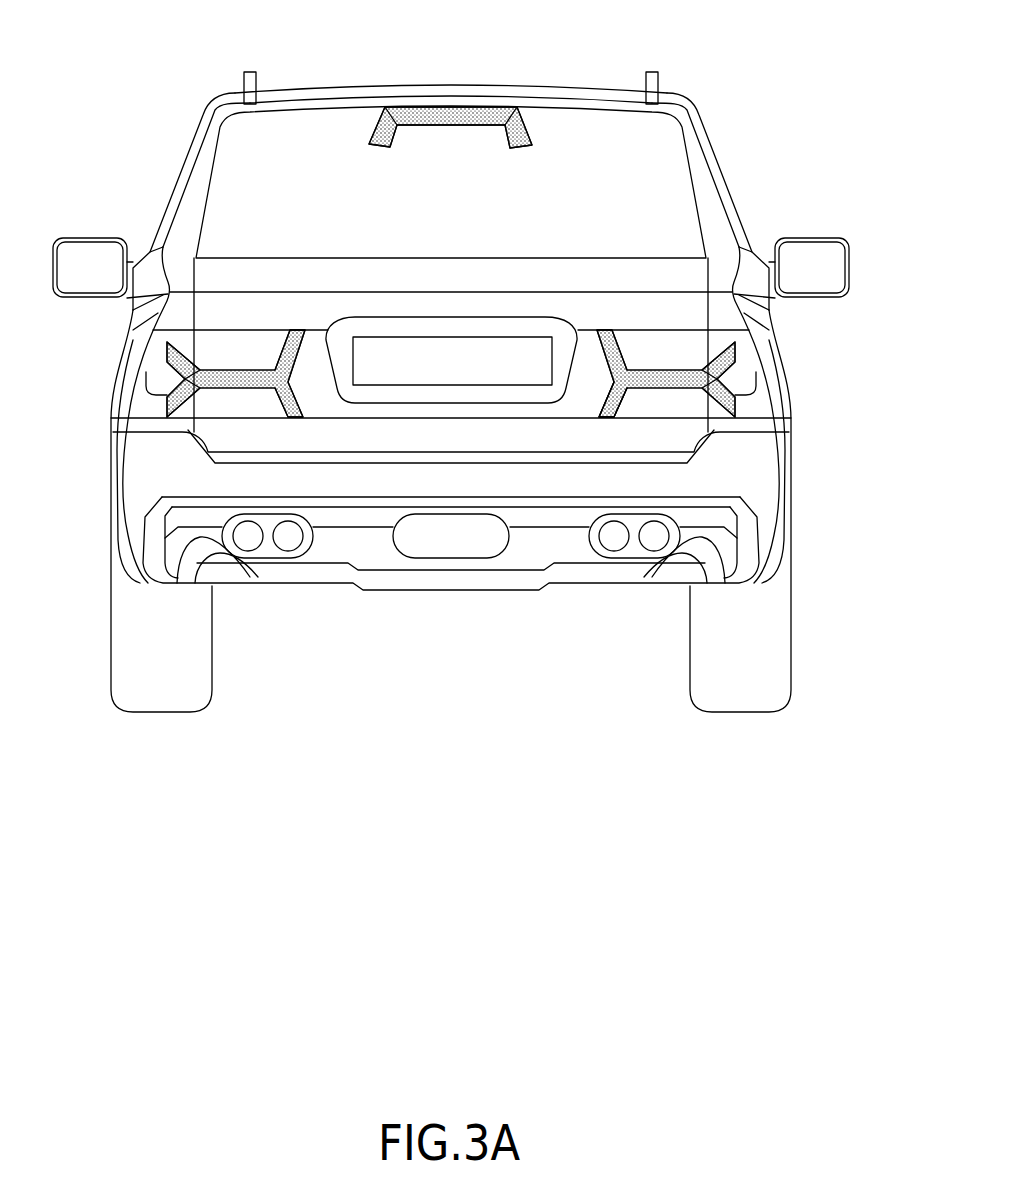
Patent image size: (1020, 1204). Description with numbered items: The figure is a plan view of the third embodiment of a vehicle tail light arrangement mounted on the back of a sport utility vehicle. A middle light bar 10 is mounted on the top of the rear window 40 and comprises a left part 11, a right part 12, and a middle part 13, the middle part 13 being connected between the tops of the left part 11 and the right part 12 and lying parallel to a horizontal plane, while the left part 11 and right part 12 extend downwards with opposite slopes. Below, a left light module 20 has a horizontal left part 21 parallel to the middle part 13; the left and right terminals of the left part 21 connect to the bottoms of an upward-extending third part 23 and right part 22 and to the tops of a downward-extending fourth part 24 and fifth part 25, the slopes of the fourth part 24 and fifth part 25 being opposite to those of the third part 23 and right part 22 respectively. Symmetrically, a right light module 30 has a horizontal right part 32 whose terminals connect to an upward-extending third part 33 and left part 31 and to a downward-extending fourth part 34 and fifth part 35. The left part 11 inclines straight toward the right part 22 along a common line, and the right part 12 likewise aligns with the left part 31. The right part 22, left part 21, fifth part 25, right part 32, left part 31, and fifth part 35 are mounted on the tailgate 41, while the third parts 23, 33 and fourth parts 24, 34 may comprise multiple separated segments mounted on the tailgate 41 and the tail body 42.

The middle light bar 10 is at (357, 131).
The left part 11 is at (378, 150).
The right part 12 is at (530, 150).
The middle part 13 is at (456, 128).
The left light module 20 is at (258, 412).
The left part 21 is at (240, 384).
The right part 22 is at (328, 348).
The third part 23 is at (167, 352).
The fourth part 24 is at (171, 402).
The fifth part 25 is at (252, 410).
The right light module 30 is at (655, 412).
The left part 31 is at (600, 343).
The right part 32 is at (690, 400).
The third part 33 is at (722, 370).
The fourth part 34 is at (740, 412).
The fifth part 35 is at (607, 413).
The rear window 40 is at (585, 122).
The tailgate 41 is at (658, 343).
The tail body 42 is at (758, 380).